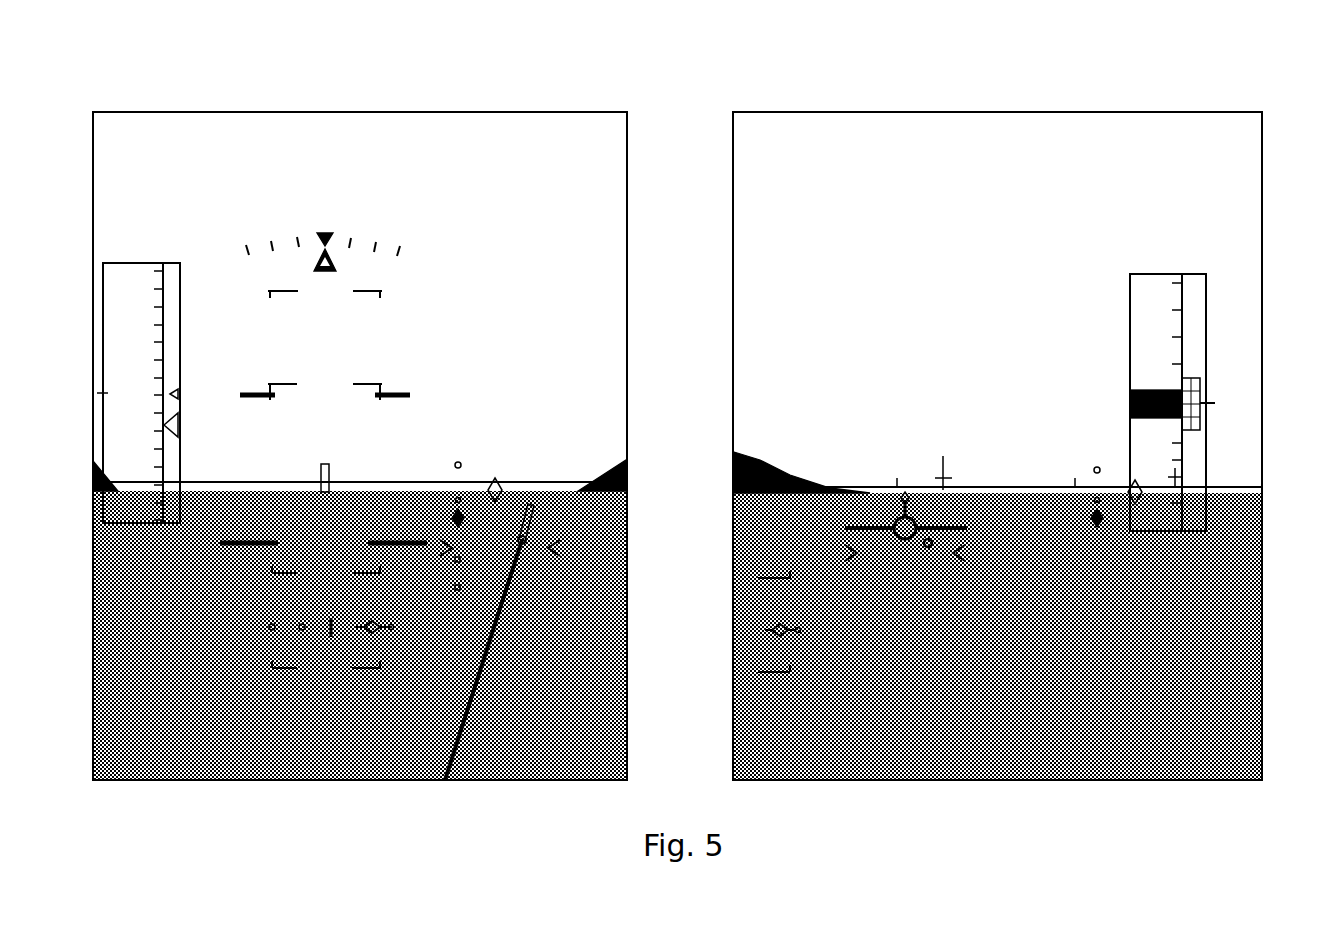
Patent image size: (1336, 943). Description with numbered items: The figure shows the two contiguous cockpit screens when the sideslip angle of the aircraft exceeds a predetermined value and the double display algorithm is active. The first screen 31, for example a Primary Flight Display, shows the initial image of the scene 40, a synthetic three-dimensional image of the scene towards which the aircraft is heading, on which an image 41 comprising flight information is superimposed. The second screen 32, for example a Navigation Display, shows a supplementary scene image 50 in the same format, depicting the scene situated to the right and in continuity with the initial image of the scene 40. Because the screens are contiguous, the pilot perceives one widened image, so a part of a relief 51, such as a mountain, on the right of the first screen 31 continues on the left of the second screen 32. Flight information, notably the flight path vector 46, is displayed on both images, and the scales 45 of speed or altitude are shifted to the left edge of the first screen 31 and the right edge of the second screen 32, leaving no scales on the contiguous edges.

The first screen 31 is at (558, 110).
The second screen 32 is at (1223, 110).
The initial image of the scene 40 is at (124, 207).
The image comprising flight information 41 is at (111, 530).
The scales 45 is at (108, 416).
The flight path vector 46 is at (893, 537).
The supplementary scene image 50 is at (1229, 241).
The relief 51 is at (626, 462).